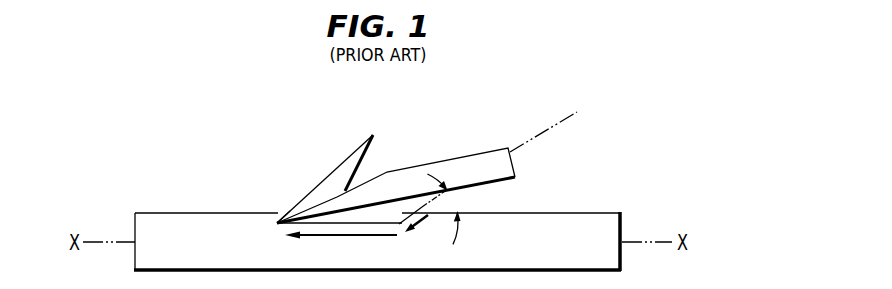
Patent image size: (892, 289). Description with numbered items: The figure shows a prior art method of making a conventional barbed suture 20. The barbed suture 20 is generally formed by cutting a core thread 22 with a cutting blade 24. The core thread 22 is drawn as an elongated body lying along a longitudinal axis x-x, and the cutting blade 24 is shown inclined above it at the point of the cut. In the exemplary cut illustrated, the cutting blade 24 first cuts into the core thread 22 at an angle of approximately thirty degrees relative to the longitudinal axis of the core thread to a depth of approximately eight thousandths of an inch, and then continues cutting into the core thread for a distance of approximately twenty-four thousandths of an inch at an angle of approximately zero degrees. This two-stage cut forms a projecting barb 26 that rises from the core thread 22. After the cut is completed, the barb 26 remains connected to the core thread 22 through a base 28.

The barbed suture 20 is at (299, 97).
The core thread 22 is at (168, 213).
The cutting blade 24 is at (448, 161).
The projecting barb 26 is at (358, 154).
The base 28 is at (292, 212).